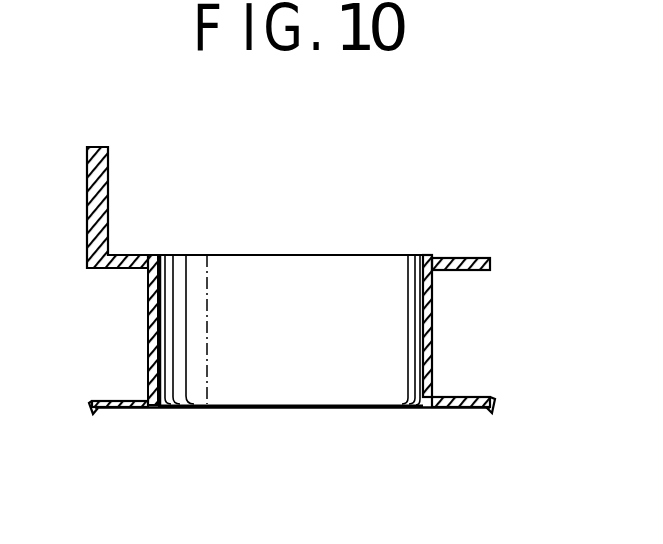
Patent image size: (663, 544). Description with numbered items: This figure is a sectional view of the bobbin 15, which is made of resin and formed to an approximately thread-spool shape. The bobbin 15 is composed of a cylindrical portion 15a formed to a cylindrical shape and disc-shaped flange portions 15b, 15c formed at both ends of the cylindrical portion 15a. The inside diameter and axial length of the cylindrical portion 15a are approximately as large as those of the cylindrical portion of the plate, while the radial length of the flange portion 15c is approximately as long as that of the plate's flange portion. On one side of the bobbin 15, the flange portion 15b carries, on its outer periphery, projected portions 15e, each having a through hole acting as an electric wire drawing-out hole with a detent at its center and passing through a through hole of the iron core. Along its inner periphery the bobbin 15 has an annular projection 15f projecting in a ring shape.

The bobbin 15 is at (337, 253).
The cylindrical portion 15a is at (433, 322).
The flange portion 15b is at (480, 258).
The flange portion 15c is at (460, 408).
The projected portion 15e is at (108, 208).
The annular projection 15f is at (430, 256).